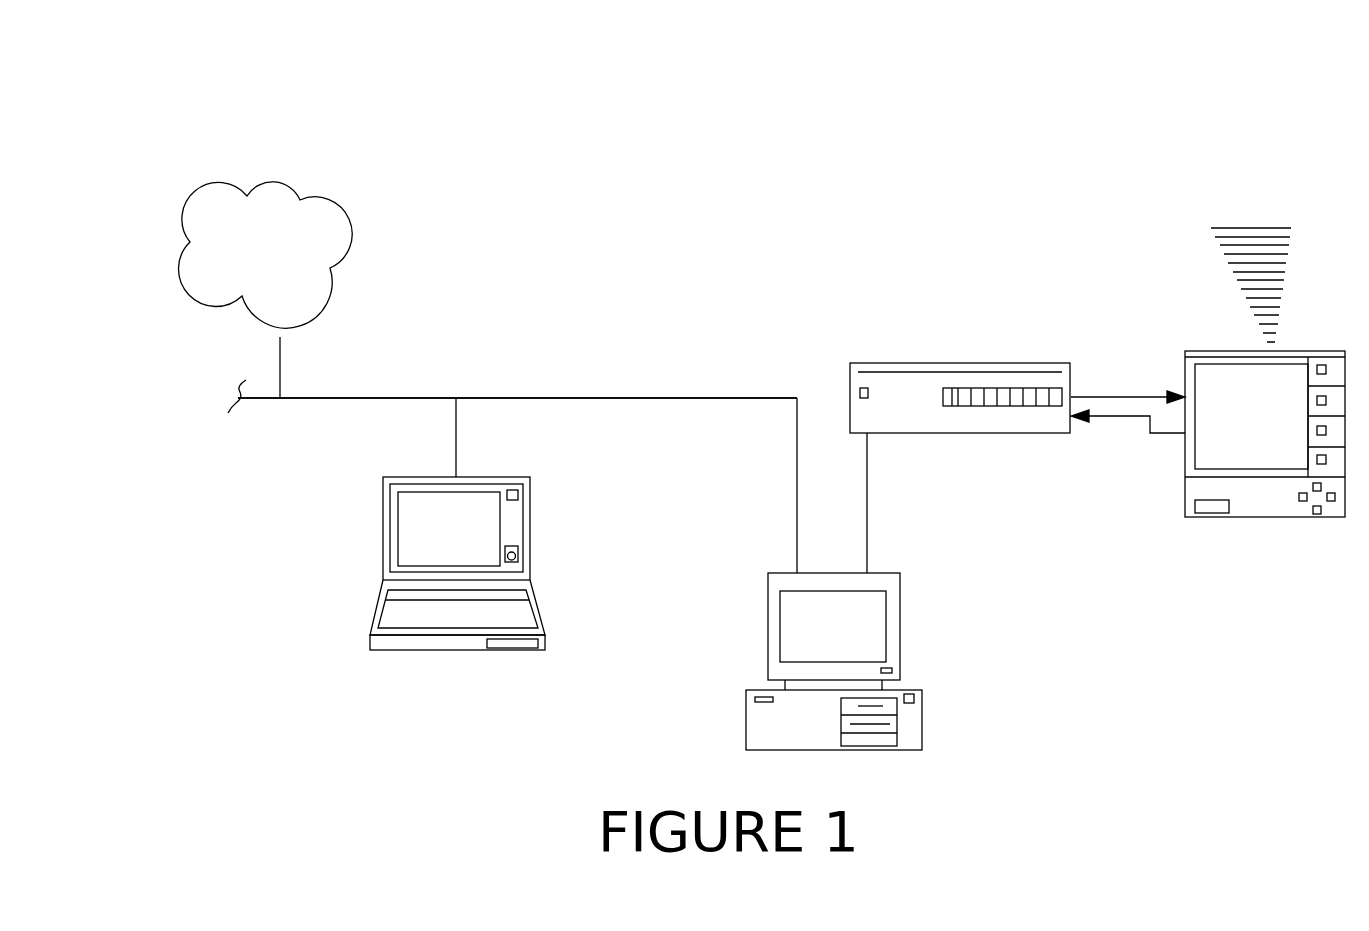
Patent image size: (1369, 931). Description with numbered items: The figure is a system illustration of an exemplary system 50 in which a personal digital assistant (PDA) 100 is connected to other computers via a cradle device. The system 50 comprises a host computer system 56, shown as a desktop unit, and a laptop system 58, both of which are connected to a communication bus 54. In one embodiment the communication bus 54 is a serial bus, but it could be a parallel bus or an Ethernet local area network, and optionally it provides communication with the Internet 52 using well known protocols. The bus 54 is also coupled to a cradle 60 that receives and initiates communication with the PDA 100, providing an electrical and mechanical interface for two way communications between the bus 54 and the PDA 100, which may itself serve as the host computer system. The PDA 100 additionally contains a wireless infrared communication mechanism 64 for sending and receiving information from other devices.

The system 50 is at (153, 53).
The Internet 52 is at (340, 195).
The communication bus 54 is at (561, 396).
The host computer system 56 is at (901, 599).
The laptop system 58 is at (500, 477).
The cradle 60 is at (992, 362).
The wireless infrared communication mechanism 64 is at (1212, 267).
The personal digital assistant (PDA) 100 is at (1308, 350).